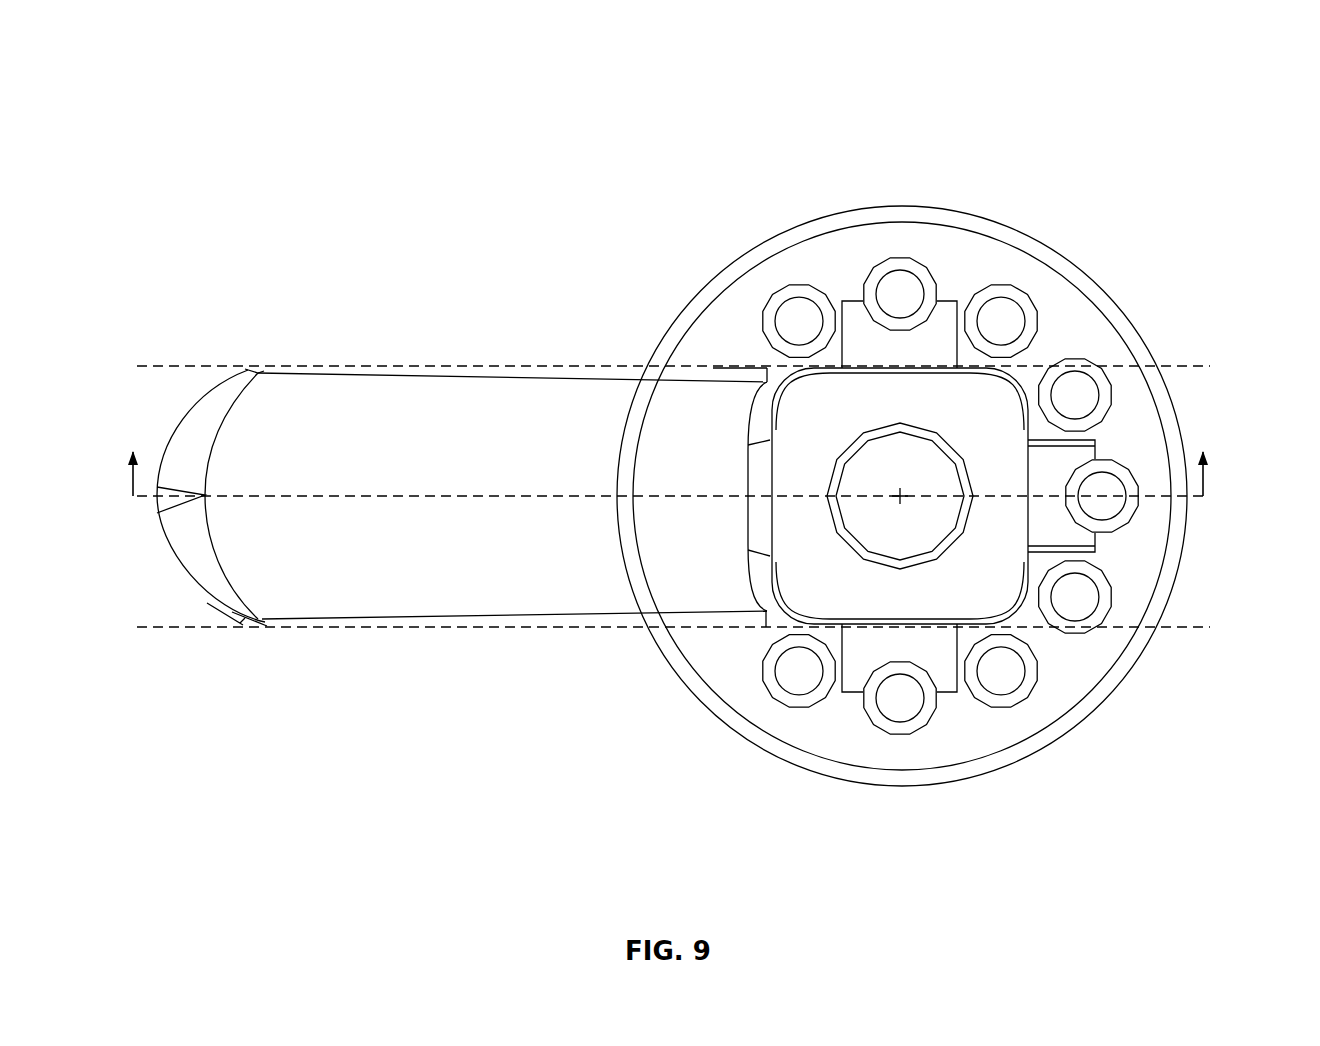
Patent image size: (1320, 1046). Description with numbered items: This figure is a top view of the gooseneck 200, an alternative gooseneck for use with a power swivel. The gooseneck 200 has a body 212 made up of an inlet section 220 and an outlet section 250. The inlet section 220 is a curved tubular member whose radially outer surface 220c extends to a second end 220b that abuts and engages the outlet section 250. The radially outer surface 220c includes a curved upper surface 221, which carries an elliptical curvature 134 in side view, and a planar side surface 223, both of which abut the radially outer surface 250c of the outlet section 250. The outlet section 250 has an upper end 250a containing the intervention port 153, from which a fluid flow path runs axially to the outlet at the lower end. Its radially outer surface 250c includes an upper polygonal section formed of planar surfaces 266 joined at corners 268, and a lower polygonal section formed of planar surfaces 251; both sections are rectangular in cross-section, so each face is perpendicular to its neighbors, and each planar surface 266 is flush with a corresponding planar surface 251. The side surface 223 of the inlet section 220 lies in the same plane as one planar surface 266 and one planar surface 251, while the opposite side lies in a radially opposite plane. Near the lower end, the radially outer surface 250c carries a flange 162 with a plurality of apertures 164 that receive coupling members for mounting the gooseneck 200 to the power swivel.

The gooseneck 200 is at (190, 80).
The body 212 is at (571, 282).
The inlet section 220 is at (413, 338).
The upper surface 221 is at (471, 366).
The side surface 223 is at (462, 622).
The second end 220b is at (746, 468).
The radially outer surface 220c is at (318, 592).
The elliptical curvature 134 is at (203, 561).
The flange 162 is at (752, 715).
The apertures 164 is at (795, 693).
The outlet section 250 is at (857, 343).
The upper end 250a is at (815, 594).
The radially outer surface 250c is at (912, 365).
The planar surfaces 266 is at (958, 366).
The planar surfaces 251 is at (968, 496).
The corners 268 is at (1023, 368).
The intervention port 153 is at (940, 437).